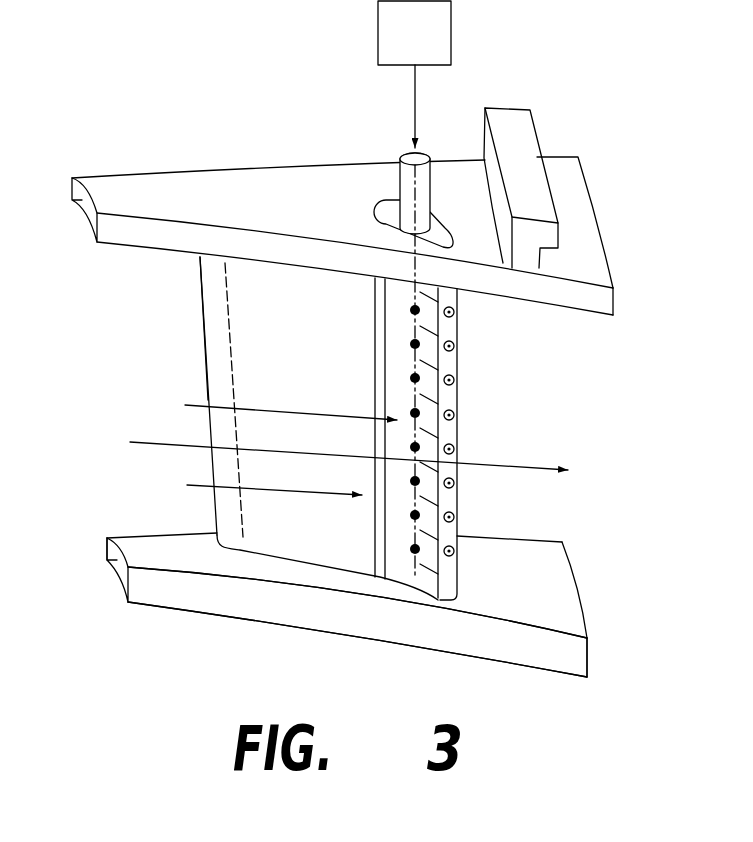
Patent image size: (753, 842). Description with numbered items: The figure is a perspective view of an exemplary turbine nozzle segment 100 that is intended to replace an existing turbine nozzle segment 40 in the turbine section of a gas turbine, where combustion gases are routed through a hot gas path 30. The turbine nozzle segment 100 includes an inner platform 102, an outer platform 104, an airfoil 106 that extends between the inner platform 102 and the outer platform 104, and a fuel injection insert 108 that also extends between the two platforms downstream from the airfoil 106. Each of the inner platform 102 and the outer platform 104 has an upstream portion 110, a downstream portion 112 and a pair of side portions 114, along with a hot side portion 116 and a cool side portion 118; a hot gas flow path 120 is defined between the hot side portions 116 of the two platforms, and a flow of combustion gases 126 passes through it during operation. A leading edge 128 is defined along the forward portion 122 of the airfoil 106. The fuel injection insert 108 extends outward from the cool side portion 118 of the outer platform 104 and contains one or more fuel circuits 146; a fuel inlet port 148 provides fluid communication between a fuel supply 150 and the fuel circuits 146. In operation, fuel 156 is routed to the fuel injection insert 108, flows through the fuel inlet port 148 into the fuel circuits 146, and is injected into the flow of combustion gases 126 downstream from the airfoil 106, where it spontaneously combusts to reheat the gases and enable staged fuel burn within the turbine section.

The hot gas path 30 is at (308, 412).
The turbine nozzle segment 40 is at (264, 98).
The turbine nozzle segment 100 is at (134, 84).
The inner platform 102 is at (210, 627).
The outer platform 104 is at (123, 155).
The airfoil 106 is at (316, 329).
The fuel injection insert 108 is at (398, 340).
The upstream portion 110 is at (72, 200).
The downstream portion 112 is at (597, 203).
The side portions 114 is at (287, 167).
The hot side portion 116 is at (527, 305).
The cool side portion 118 is at (113, 190).
The hot gas flow path 120 is at (147, 440).
The forward portion 122 is at (213, 285).
The flow of combustion gases 126 is at (197, 483).
The leading edge 128 is at (200, 320).
The fuel circuit 146 is at (392, 180).
The fuel inlet port 148 is at (420, 150).
The fuel supply 150 is at (391, 48).
The fuel 156 is at (413, 88).